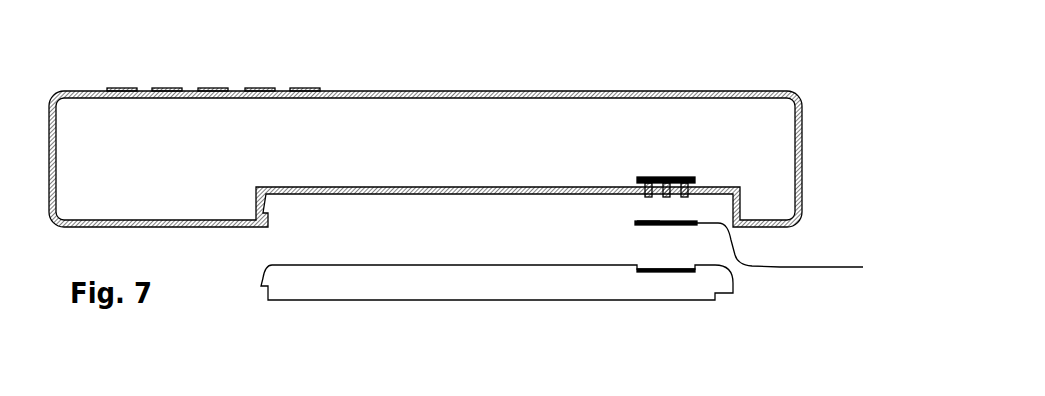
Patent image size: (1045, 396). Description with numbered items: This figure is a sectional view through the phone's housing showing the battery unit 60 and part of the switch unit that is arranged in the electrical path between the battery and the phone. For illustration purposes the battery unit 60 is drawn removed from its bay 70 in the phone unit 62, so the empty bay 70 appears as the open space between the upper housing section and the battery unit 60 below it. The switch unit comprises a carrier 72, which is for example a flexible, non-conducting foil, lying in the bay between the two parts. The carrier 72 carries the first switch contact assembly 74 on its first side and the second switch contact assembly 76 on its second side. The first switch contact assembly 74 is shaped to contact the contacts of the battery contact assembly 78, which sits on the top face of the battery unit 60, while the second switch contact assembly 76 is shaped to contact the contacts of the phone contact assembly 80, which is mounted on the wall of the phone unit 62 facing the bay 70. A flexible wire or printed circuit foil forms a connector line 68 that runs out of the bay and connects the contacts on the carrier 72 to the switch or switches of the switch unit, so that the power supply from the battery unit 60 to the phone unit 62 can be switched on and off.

The battery unit 60 is at (497, 303).
The phone unit 62 is at (425, 139).
The connector line 68 is at (799, 298).
The bay 70 is at (295, 291).
The carrier 72 is at (616, 287).
The first switch contact assembly 74 is at (702, 291).
The second switch contact assembly 76 is at (596, 138).
The battery contact assembly 78 is at (658, 308).
The phone contact assembly 80 is at (646, 123).